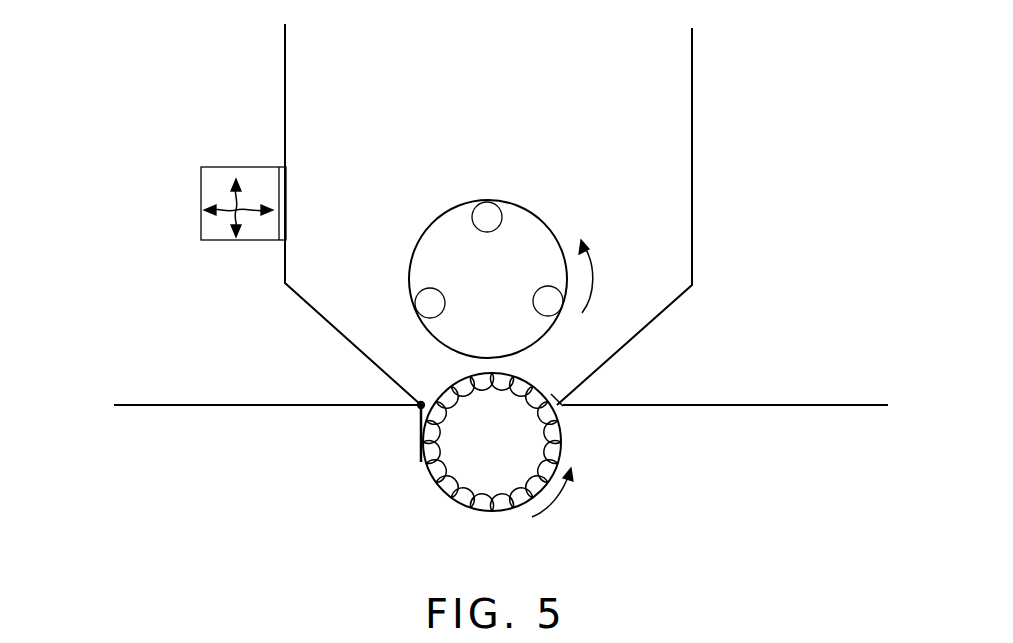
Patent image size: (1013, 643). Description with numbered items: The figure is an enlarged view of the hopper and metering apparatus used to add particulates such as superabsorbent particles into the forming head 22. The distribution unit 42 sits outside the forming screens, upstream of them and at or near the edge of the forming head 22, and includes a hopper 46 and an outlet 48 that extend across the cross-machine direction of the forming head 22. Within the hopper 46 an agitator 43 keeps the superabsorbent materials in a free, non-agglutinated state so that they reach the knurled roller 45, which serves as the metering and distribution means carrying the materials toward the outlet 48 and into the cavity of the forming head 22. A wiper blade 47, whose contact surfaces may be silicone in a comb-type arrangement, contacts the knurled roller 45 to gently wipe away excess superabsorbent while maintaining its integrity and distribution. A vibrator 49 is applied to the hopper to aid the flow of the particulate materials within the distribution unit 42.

The forming head 22 is at (763, 438).
The distribution unit 42 is at (692, 155).
The agitator 43 is at (549, 222).
The knurled roller 45 is at (446, 493).
The hopper 46 is at (675, 117).
The wiper blade 47 is at (420, 428).
The outlet 48 is at (556, 400).
The vibrator 49 is at (236, 166).